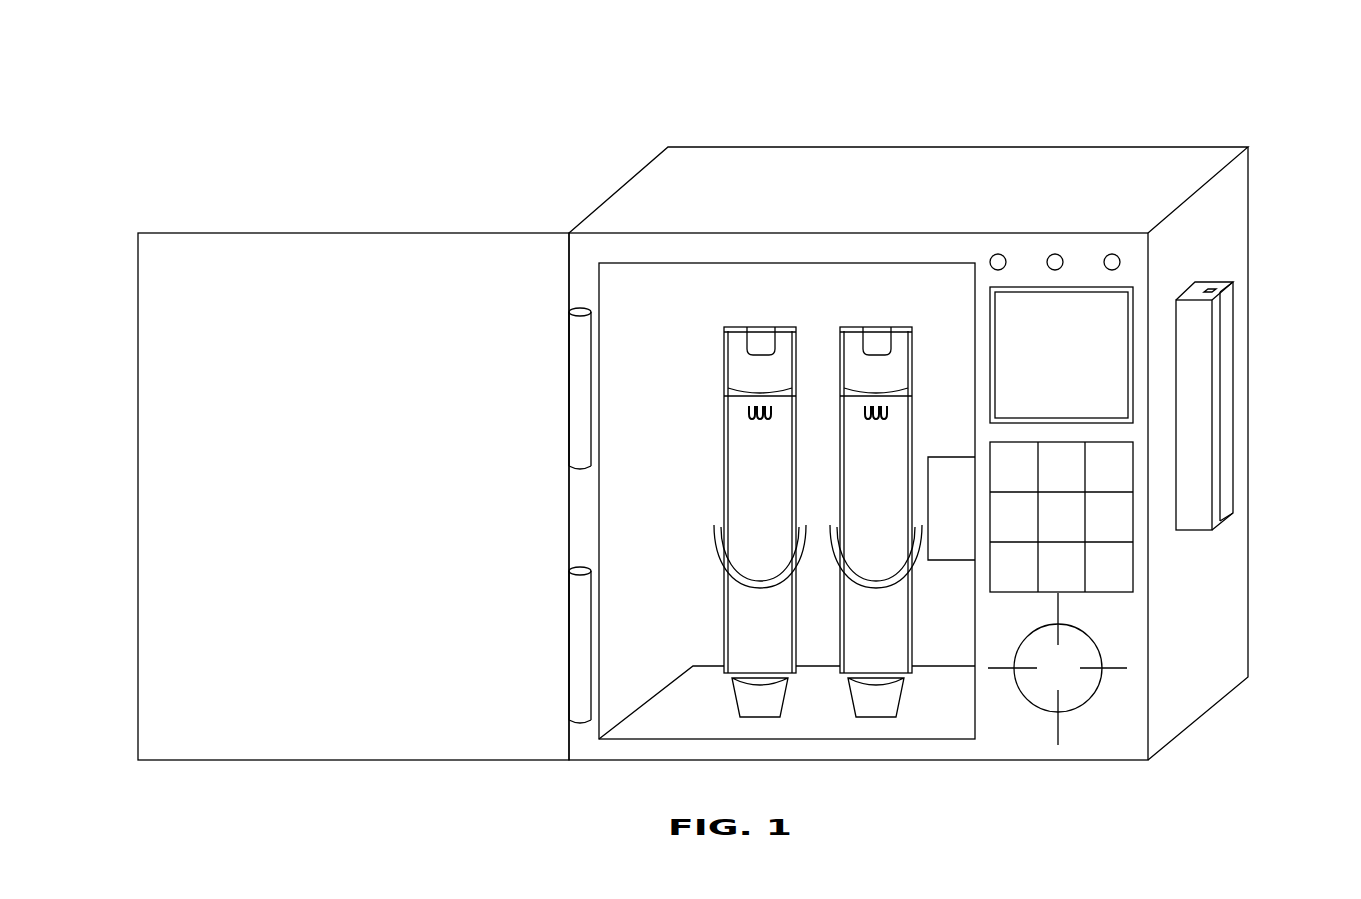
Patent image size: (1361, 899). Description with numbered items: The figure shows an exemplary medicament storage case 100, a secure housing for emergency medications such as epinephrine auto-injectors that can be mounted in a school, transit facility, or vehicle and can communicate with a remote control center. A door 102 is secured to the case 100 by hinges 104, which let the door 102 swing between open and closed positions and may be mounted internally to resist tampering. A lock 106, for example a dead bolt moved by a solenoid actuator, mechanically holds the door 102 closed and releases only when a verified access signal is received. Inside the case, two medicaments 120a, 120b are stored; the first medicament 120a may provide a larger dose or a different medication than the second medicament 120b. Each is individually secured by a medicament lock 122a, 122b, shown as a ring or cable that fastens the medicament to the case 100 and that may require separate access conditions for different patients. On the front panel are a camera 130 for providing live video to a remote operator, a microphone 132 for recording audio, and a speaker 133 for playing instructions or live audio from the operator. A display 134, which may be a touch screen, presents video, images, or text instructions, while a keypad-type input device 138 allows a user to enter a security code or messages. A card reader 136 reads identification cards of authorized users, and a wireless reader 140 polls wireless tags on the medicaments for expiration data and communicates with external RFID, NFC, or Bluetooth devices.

The medicament storage case 100 is at (881, 390).
The door 102 is at (245, 232).
The hinges 104 is at (578, 307).
The lock 106 is at (951, 548).
The medicament 120a is at (757, 327).
The medicament 120b is at (876, 327).
The medicament lock 122a is at (713, 548).
The medicament lock 122b is at (833, 565).
The camera 130 is at (998, 254).
The microphone 132 is at (1057, 254).
The speaker 133 is at (1115, 254).
The display 134 is at (1150, 247).
The card reader 136 is at (1232, 282).
The input device 138 is at (1133, 572).
The wireless reader 140 is at (1097, 693).